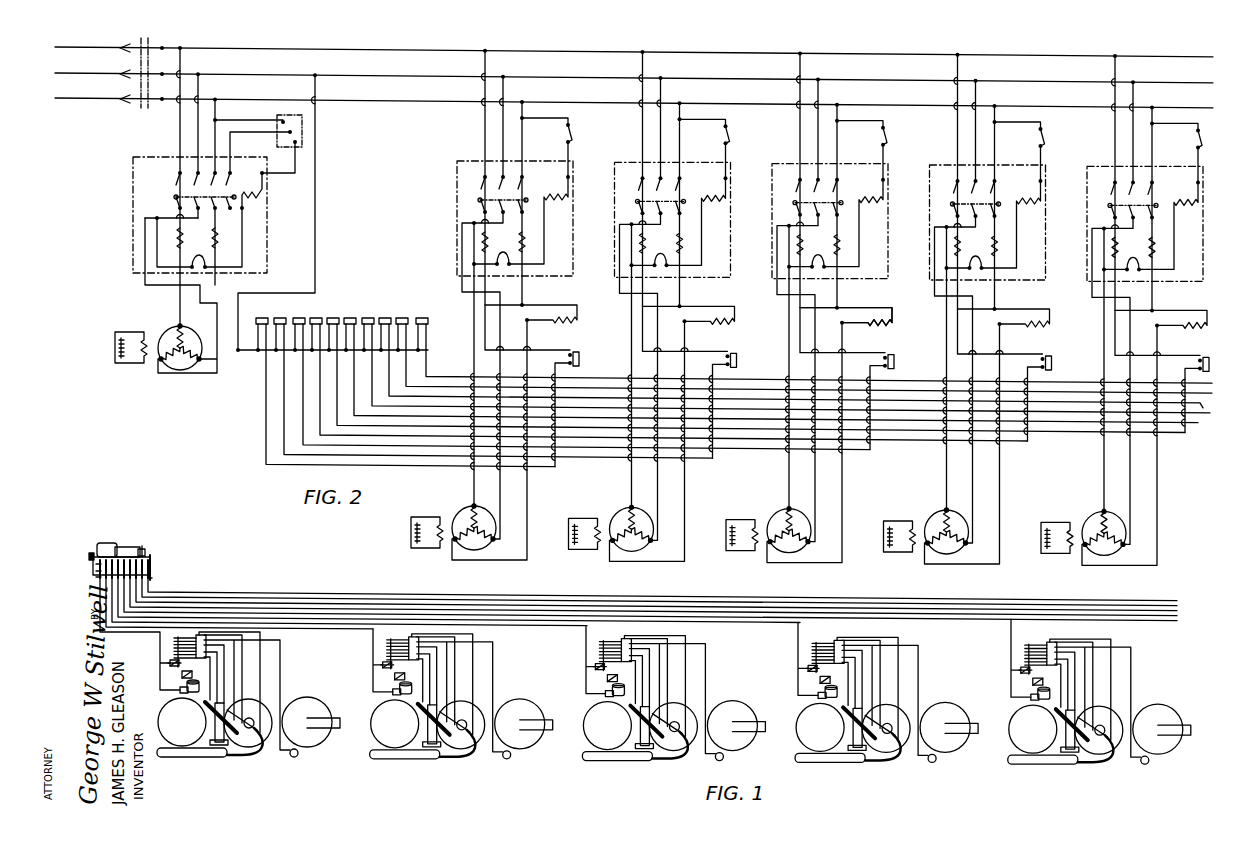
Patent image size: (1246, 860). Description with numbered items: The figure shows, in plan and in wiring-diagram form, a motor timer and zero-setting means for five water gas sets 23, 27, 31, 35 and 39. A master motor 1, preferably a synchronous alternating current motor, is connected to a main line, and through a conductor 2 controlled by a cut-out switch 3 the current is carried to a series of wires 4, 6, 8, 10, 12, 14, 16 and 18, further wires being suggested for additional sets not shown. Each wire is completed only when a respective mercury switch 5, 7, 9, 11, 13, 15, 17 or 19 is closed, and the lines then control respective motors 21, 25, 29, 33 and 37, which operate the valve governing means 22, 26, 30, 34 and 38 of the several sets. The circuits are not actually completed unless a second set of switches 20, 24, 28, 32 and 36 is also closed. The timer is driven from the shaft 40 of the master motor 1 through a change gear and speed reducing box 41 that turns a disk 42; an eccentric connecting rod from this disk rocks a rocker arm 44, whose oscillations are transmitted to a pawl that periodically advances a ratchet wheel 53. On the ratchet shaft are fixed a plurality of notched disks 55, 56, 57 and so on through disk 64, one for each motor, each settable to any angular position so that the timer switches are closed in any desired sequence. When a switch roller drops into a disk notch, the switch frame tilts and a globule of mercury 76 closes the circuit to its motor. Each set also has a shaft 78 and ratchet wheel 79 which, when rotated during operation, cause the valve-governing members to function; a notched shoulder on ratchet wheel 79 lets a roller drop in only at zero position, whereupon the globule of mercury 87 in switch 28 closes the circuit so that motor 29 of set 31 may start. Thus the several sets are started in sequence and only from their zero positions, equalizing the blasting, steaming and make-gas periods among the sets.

In FIG. 2, the master motor 1 is at (170, 335).
In FIG. 1, the master motor 1 is at (143, 546).
In FIG. 2, the conductor 2 is at (313, 198).
In FIG. 2, the cut-out switch 3 is at (241, 355).
In FIG. 2, the wire 4 is at (264, 380).
In FIG. 1, the wire 4 is at (150, 633).
In FIG. 2, the mercury switch 5 is at (262, 318).
In FIG. 2, the wire 6 is at (283, 380).
In FIG. 1, the wire 6 is at (310, 626).
In FIG. 2, the mercury switch 7 is at (280, 318).
In FIG. 2, the wire 8 is at (302, 380).
In FIG. 1, the wire 8 is at (406, 623).
In FIG. 2, the mercury switch 9 is at (299, 318).
In FIG. 2, the wire 10 is at (319, 380).
In FIG. 1, the wire 10 is at (510, 619).
In FIG. 2, the mercury switch 11 is at (316, 318).
In FIG. 2, the wire 12 is at (336, 380).
In FIG. 1, the wire 12 is at (615, 615).
In FIG. 2, the mercury switch 13 is at (333, 318).
In FIG. 2, the wire 14 is at (353, 380).
In FIG. 1, the wire 14 is at (710, 611).
In FIG. 2, the mercury switch 15 is at (350, 318).
In FIG. 2, the wire 16 is at (371, 380).
In FIG. 1, the wire 16 is at (810, 607).
In FIG. 2, the mercury switch 17 is at (368, 318).
In FIG. 2, the wire 18 is at (388, 380).
In FIG. 1, the wire 18 is at (910, 603).
In FIG. 2, the mercury switch 19 is at (385, 318).
In FIG. 2, the switch 20 is at (580, 355).
In FIG. 1, the switch 20 is at (168, 662).
In FIG. 2, the motor 21 is at (460, 512).
In FIG. 1, the motor 21 is at (195, 682).
In FIG. 1, the valve governing means 22 is at (203, 633).
In FIG. 1, the water gas set 23 is at (248, 703).
In FIG. 2, the switch 24 is at (738, 357).
In FIG. 1, the switch 24 is at (381, 664).
In FIG. 2, the motor 25 is at (618, 513).
In FIG. 1, the motor 25 is at (406, 684).
In FIG. 1, the valve governing means 26 is at (416, 635).
In FIG. 1, the water gas set 27 is at (461, 704).
In FIG. 2, the switch 28 is at (896, 358).
In FIG. 1, the switch 28 is at (594, 666).
In FIG. 2, the motor 29 is at (775, 514).
In FIG. 1, the motor 29 is at (618, 686).
In FIG. 1, the valve governing means 30 is at (628, 637).
In FIG. 1, the water gas set 31 is at (673, 706).
In FIG. 2, the switch 32 is at (1053, 360).
In FIG. 1, the switch 32 is at (807, 668).
In FIG. 2, the motor 33 is at (933, 516).
In FIG. 1, the motor 33 is at (832, 688).
In FIG. 1, the valve governing means 34 is at (841, 639).
In FIG. 1, the water gas set 35 is at (886, 706).
In FIG. 2, the switch 36 is at (1206, 358).
In FIG. 1, the switch 36 is at (1020, 670).
In FIG. 2, the motor 37 is at (1090, 517).
In FIG. 1, the motor 37 is at (1044, 690).
In FIG. 1, the valve governing means 38 is at (1054, 642).
In FIG. 1, the water gas set 39 is at (1099, 708).
In FIG. 1, the shaft 40 is at (127, 546).
In FIG. 1, the change gear and speed reducing box 41 is at (100, 542).
In FIG. 1, the disk 42 is at (96, 547).
In FIG. 1, the rocker arm 44 is at (89, 556).
In FIG. 1, the ratchet wheel 53 is at (152, 556).
In FIG. 1, the disk 55 is at (97, 566).
In FIG. 1, the disk 56 is at (97, 573).
In FIG. 1, the disk 57 is at (99, 581).
In FIG. 1, the disk 64 is at (153, 580).
In FIG. 2, the globule of mercury 76 is at (314, 296).
In FIG. 1, the shaft 78 is at (179, 690).
In FIG. 1, the ratchet wheel 79 is at (181, 674).
In FIG. 2, the globule of mercury 87 is at (896, 334).